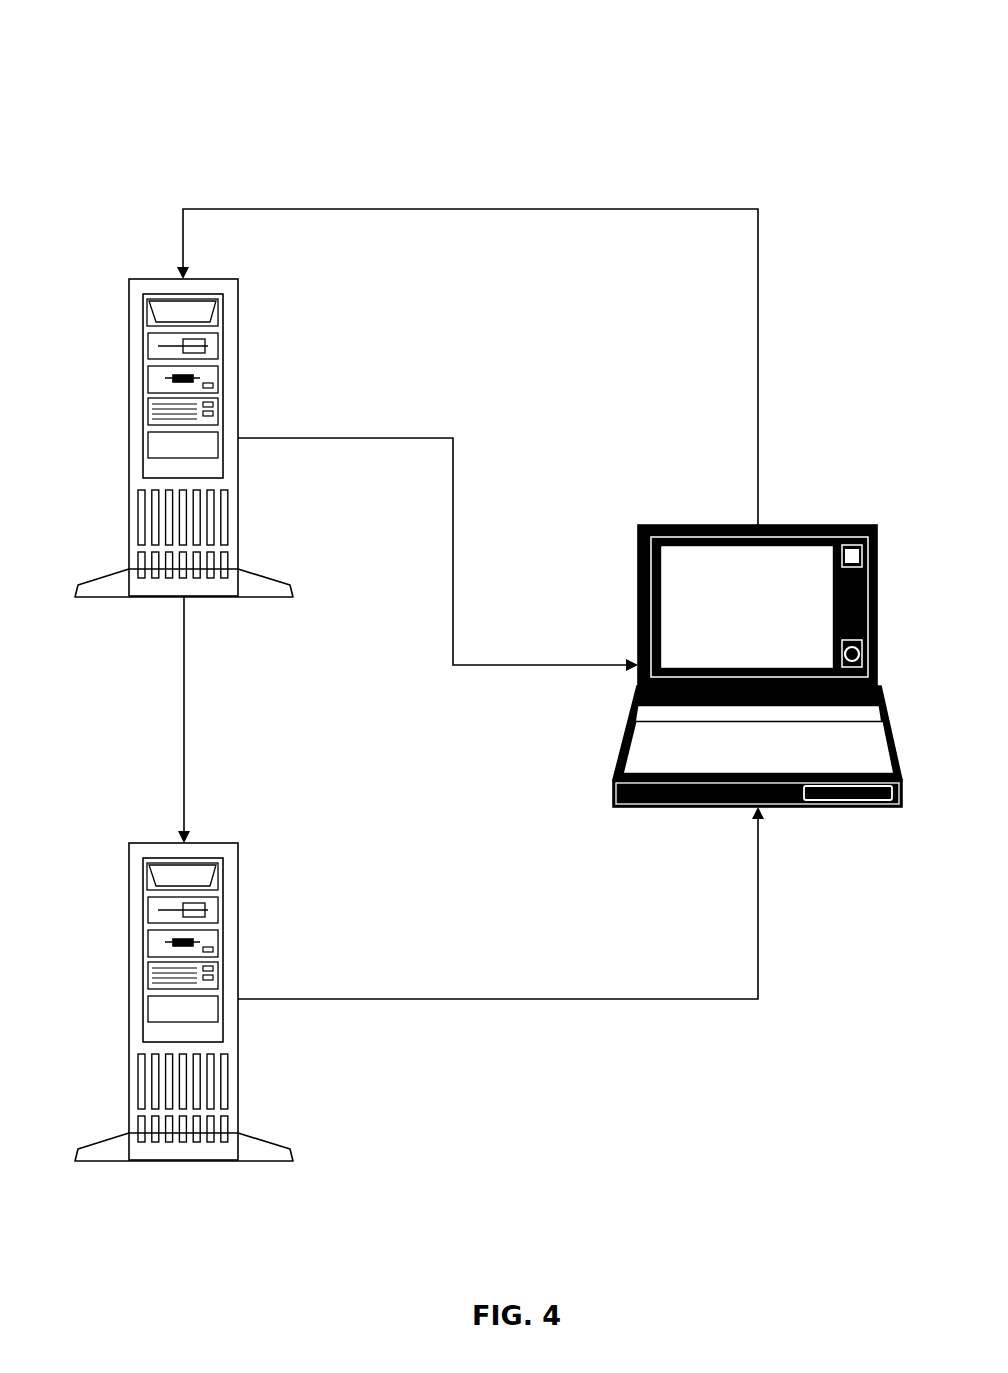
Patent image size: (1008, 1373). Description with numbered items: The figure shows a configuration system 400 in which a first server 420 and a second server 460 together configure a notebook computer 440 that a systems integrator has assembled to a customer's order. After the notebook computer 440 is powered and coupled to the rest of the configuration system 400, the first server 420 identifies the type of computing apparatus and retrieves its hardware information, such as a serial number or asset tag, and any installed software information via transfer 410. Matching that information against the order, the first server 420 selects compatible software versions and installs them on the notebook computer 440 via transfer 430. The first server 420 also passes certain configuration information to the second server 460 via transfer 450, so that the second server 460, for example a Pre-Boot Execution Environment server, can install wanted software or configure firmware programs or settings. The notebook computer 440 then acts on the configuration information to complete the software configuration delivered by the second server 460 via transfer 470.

The configuration system 400 is at (142, 80).
The transfer 410 is at (578, 209).
The first server 420 is at (238, 348).
The transfer 430 is at (453, 507).
The notebook computer 440 is at (793, 523).
The transfer 450 is at (184, 737).
The second server 460 is at (238, 911).
The transfer 470 is at (435, 999).